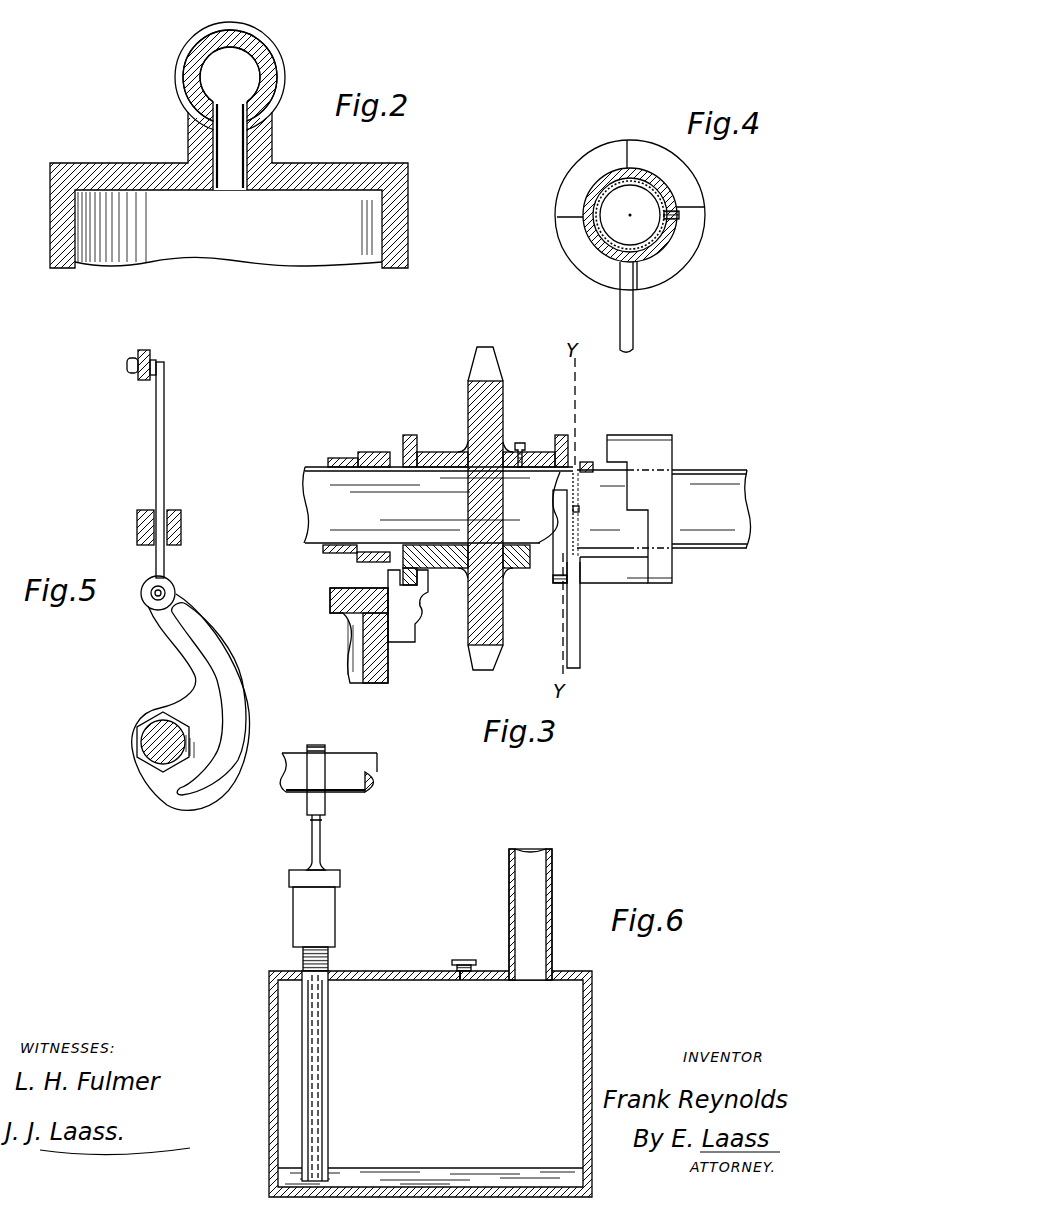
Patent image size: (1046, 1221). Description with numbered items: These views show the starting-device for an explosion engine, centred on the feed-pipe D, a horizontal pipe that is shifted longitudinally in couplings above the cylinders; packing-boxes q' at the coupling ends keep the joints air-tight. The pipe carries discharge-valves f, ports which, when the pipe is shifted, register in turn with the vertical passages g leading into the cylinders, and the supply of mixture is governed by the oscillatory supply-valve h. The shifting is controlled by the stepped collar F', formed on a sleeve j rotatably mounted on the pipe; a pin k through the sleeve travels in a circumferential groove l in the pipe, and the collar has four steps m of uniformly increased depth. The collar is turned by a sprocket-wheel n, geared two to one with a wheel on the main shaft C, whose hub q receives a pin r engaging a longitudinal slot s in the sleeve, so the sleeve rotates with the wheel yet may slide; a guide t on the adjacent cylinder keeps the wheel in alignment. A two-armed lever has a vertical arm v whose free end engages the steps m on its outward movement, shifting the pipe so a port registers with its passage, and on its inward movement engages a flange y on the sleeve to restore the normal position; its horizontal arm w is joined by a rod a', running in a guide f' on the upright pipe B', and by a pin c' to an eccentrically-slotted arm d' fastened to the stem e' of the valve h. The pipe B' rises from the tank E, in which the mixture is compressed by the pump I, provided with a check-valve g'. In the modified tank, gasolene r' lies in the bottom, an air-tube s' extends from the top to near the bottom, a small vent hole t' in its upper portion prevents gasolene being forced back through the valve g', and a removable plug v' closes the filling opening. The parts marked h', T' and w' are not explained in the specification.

In FIG. 2, the collar h' is at (242, 77).
In FIG. 3, the collar h' is at (340, 488).
In FIG. 2, the check-valve g' is at (231, 66).
In FIG. 6, the check-valve g' is at (296, 957).
In FIG. 2, the feed-pipe D is at (267, 72).
In FIG. 4, the feed-pipe D is at (583, 226).
In FIG. 3, the feed-pipe D is at (527, 507).
In FIG. 2, the discharge-valves f is at (230, 137).
In FIG. 2, the vertical passages g is at (230, 168).
In FIG. 2, the supply-valve h is at (229, 190).
In FIG. 3, the supply-valve h is at (344, 635).
In FIG. 4, the steps m is at (630, 215).
In FIG. 3, the steps m is at (598, 455).
In FIG. 4, the collar F' is at (664, 215).
In FIG. 3, the collar F' is at (648, 508).
In FIG. 4, the sleeve j is at (570, 193).
In FIG. 3, the sleeve j is at (624, 504).
In FIG. 4, the circumferential groove l is at (673, 237).
In FIG. 3, the circumferential groove l is at (578, 471).
In FIG. 4, the pin k is at (708, 203).
In FIG. 3, the pin k is at (580, 510).
In FIG. 4, the vertical arm v is at (642, 307).
In FIG. 3, the vertical arm v is at (587, 615).
In FIG. 3, the packing-boxes q' is at (373, 493).
In FIG. 3, the sprocket-wheel n is at (466, 417).
In FIG. 3, the hub q is at (479, 507).
In FIG. 3, the longitudinal slot s is at (518, 440).
In FIG. 3, the pin r is at (554, 445).
In FIG. 3, the flange y is at (556, 586).
In FIG. 3, the guide t is at (408, 606).
In FIG. 5, the horizontal arm w is at (138, 380).
In FIG. 5, the rod a' is at (179, 470).
In FIG. 5, the guide f' is at (173, 527).
In FIG. 5, the pin c' is at (181, 588).
In FIG. 5, the eccentrically-slotted arm d' is at (196, 702).
In FIG. 5, the stem e' is at (141, 742).
In FIG. 6, the post T' is at (299, 807).
In FIG. 6, the main shaft C is at (356, 795).
In FIG. 6, the pump I is at (342, 914).
In FIG. 6, the upright pipe B' is at (552, 914).
In FIG. 6, the removable plug v' is at (452, 957).
In FIG. 6, the opening w' is at (449, 990).
In FIG. 6, the small hole t' is at (335, 1076).
In FIG. 6, the air-tube s' is at (337, 1076).
In FIG. 6, the tank E is at (430, 1084).
In FIG. 6, the gasolene r' is at (430, 1164).